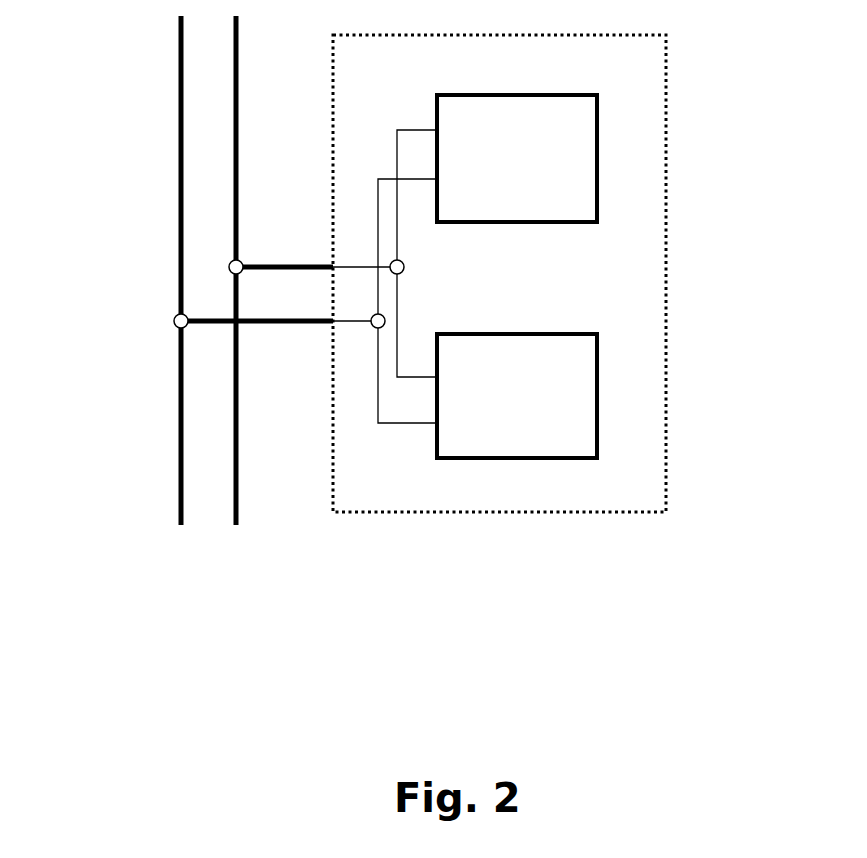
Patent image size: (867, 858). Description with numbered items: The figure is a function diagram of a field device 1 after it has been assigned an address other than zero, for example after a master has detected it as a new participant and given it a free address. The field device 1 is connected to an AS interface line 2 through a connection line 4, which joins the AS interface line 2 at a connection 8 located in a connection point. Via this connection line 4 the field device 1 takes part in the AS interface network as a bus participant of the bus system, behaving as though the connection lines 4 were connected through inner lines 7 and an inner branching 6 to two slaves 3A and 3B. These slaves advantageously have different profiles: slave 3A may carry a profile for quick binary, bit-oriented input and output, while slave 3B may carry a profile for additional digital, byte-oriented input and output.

The field device 1 is at (499, 273).
The AS interface line 2 is at (188, 533).
The slave 3A is at (517, 158).
The slave 3B is at (517, 396).
The connection line 4 is at (291, 274).
The inner branching 6 is at (389, 319).
The inner lines 7 is at (411, 382).
The connection 8 is at (171, 312).